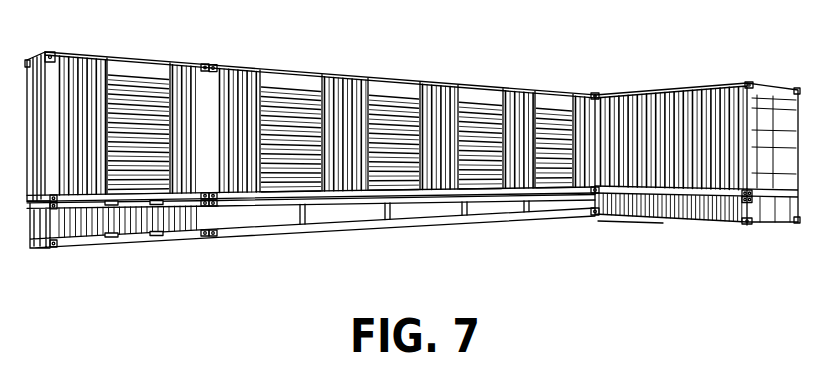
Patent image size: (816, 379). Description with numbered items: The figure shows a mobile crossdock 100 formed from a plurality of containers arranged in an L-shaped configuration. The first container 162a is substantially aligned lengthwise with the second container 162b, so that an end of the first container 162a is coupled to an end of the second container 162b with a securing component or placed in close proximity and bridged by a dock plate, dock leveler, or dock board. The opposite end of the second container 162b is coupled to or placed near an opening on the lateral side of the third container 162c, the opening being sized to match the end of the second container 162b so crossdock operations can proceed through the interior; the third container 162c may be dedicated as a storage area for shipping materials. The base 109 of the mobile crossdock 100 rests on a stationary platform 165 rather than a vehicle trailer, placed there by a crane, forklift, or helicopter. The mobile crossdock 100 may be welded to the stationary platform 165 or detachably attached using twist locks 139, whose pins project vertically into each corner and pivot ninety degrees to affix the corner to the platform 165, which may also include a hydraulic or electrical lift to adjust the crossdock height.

The mobile crossdock 100 is at (716, 260).
The first container 162a is at (97, 55).
The second container 162b is at (520, 88).
The third container 162c is at (737, 82).
The twist lock 139 is at (742, 197).
The base 109 is at (281, 198).
The stationary platform 165 is at (340, 232).